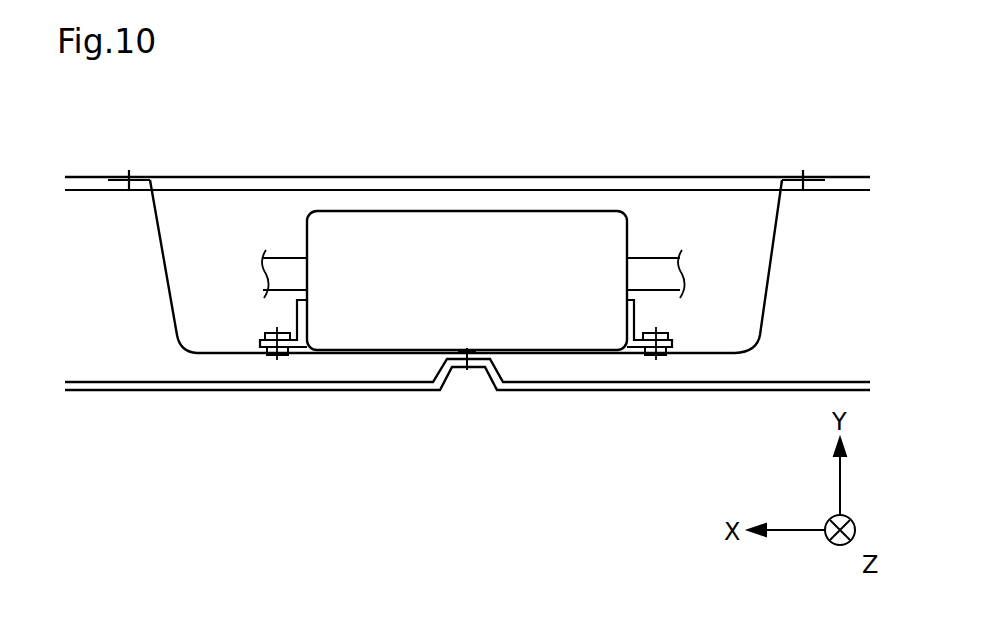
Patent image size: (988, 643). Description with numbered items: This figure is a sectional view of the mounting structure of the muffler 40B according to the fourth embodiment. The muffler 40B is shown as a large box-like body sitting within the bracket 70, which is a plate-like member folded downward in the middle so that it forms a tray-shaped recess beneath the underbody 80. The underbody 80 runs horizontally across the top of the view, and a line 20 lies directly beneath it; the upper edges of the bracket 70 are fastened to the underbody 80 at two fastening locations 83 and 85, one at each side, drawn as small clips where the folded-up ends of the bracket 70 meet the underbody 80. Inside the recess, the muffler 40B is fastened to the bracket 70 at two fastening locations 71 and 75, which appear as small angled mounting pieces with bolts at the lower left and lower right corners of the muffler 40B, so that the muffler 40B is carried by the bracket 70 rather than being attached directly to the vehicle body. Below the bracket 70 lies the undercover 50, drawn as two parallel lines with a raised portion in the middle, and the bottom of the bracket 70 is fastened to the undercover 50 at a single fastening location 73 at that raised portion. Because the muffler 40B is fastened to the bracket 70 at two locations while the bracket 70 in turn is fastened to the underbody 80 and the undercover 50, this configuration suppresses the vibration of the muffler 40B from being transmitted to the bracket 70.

The underbody 80 is at (365, 176).
The vehicle body floor 20 is at (818, 191).
The fastening location 83 is at (128, 178).
The fastening location 85 is at (803, 178).
The bracket 70 is at (773, 257).
The muffler 40B is at (629, 232).
The fastening location 71 is at (260, 352).
The fastening location 75 is at (672, 353).
The fastening location 73 is at (467, 370).
The undercover 50 is at (705, 393).